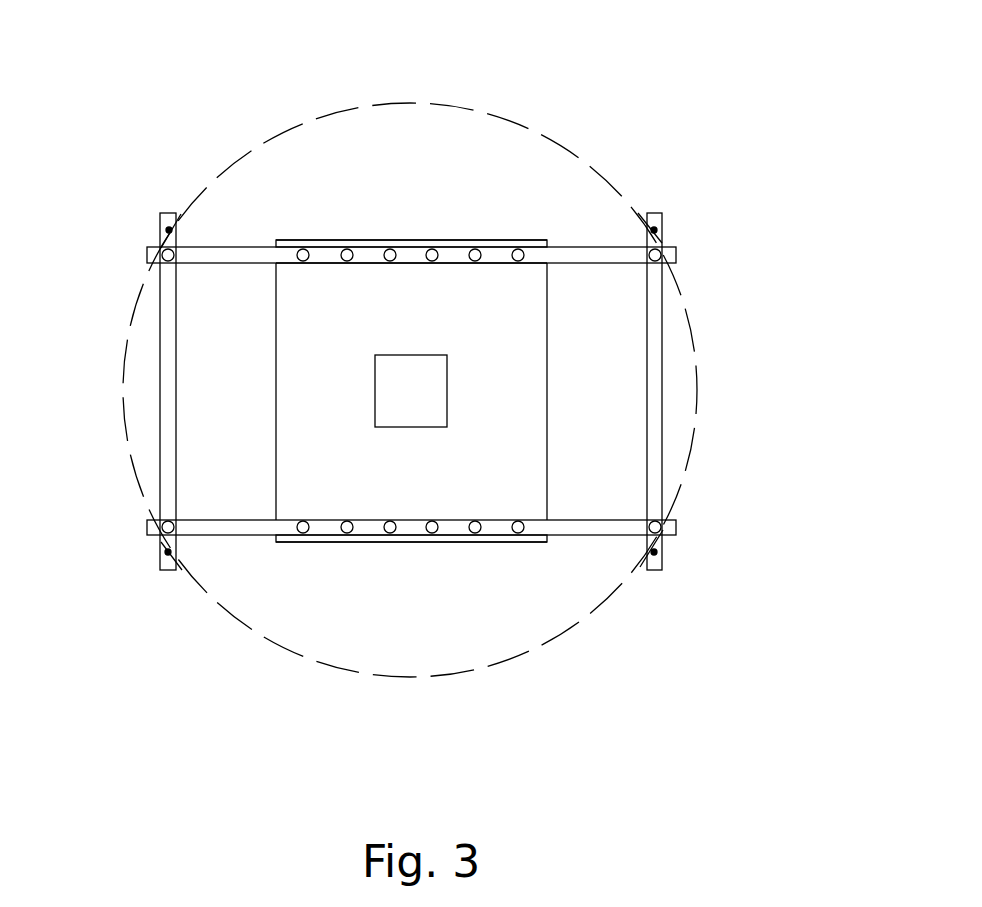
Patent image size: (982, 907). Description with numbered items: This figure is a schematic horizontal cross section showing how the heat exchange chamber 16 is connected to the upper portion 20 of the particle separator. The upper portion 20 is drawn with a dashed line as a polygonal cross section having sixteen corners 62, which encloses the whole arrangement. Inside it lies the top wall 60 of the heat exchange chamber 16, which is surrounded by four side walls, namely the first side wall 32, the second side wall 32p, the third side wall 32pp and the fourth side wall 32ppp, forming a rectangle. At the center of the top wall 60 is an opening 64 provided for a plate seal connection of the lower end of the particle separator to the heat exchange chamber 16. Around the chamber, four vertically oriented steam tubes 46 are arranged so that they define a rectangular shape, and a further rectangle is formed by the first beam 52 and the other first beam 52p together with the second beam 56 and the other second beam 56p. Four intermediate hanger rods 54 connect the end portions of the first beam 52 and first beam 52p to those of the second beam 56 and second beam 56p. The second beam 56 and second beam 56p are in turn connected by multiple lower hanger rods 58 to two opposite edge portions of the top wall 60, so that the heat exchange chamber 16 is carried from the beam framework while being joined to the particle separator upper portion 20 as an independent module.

The heat exchange chamber module 16 is at (459, 386).
The upper portion of the particle separator 20 is at (615, 183).
The side wall 32 is at (276, 433).
The side wall 32p is at (345, 542).
The side wall 32pp is at (547, 380).
The side wall 32ppp is at (495, 240).
The vertically oriented steam tubes 46 is at (655, 552).
The first beam 52 is at (662, 438).
The first beam 52p is at (160, 403).
The intermediate hanger rods 54 is at (677, 527).
The second beam 56 is at (426, 545).
The second beam 56p is at (320, 247).
The lower hanger rods 58 is at (527, 533).
The top wall of the heat exchange chamber 60 is at (415, 283).
The corners 62 is at (575, 148).
The opening 64 is at (393, 427).